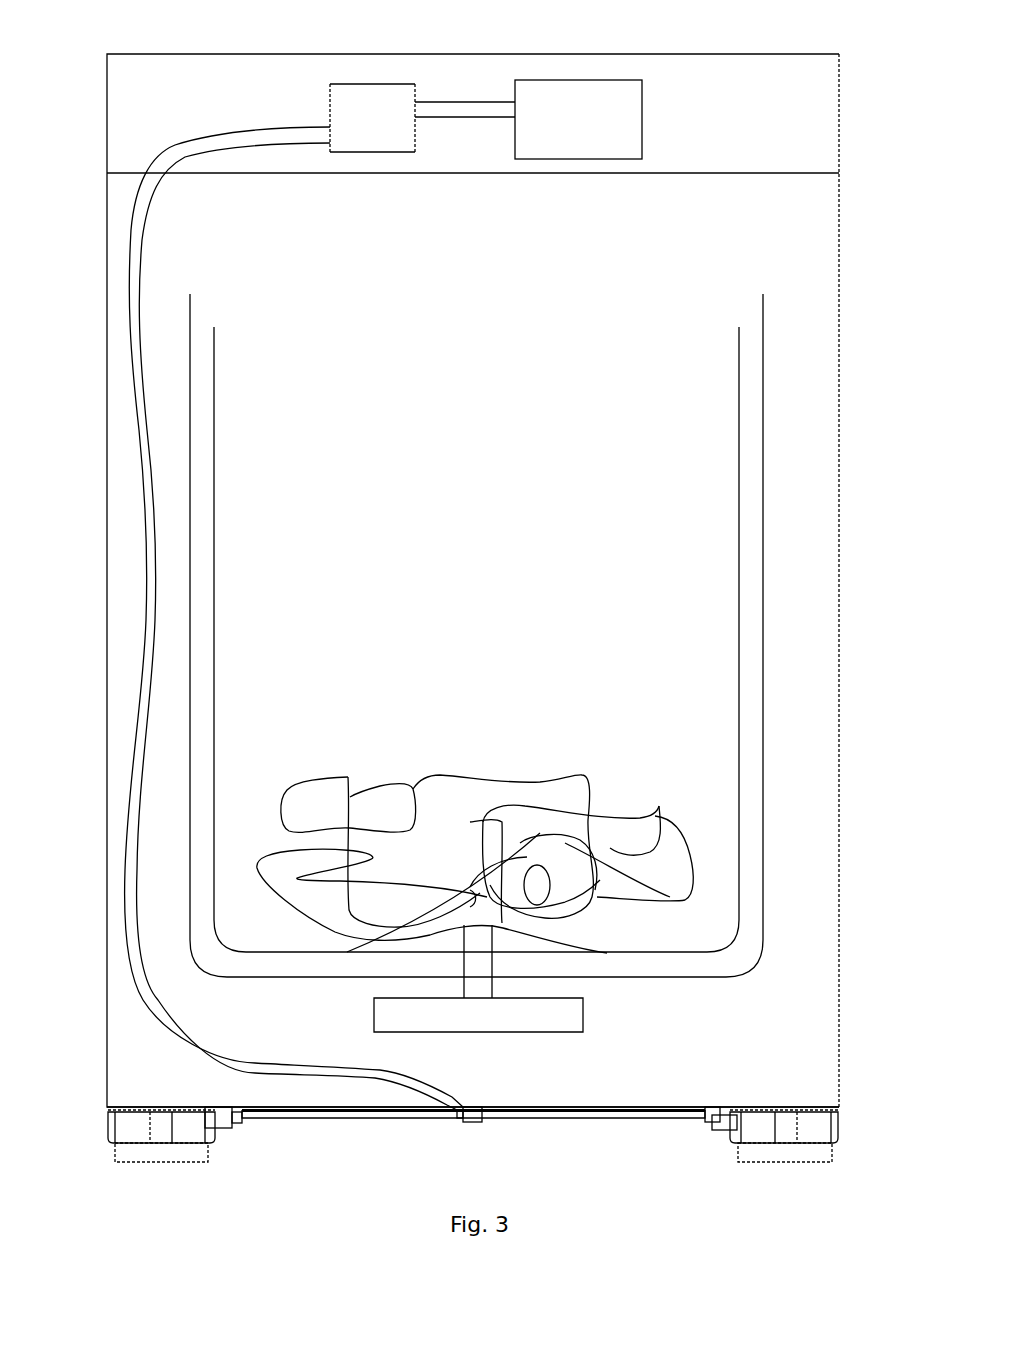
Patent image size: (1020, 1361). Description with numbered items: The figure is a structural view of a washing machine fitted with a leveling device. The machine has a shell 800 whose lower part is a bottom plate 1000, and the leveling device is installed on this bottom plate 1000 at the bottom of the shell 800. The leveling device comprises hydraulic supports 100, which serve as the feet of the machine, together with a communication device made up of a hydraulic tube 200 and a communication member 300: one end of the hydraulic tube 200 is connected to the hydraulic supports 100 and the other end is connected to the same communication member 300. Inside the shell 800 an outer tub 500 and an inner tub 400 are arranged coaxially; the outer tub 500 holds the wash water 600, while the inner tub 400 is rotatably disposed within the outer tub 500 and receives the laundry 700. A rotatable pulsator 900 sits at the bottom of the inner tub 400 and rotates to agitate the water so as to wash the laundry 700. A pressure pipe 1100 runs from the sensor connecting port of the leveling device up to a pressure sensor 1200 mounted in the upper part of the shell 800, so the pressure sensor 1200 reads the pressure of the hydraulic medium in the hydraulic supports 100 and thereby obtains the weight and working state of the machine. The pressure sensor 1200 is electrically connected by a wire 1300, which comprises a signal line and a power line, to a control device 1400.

The hydraulic support 100 is at (214, 1147).
The hydraulic tube 200 is at (412, 1118).
The communication member 300 is at (475, 1120).
The inner tub 400 is at (739, 489).
The outer tub 500 is at (763, 617).
The wash water 600 is at (708, 768).
The laundry 700 is at (690, 880).
The shell 800 is at (839, 777).
The pulsator 900 is at (540, 937).
The bottom plate 1000 is at (692, 1107).
The pressure pipe 1100 is at (138, 565).
The pressure sensor 1200 is at (346, 96).
The wire 1300 is at (455, 117).
The control device 1400 is at (642, 81).